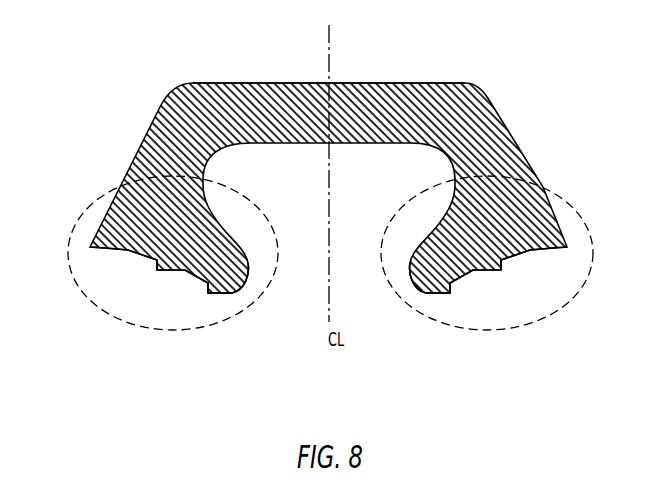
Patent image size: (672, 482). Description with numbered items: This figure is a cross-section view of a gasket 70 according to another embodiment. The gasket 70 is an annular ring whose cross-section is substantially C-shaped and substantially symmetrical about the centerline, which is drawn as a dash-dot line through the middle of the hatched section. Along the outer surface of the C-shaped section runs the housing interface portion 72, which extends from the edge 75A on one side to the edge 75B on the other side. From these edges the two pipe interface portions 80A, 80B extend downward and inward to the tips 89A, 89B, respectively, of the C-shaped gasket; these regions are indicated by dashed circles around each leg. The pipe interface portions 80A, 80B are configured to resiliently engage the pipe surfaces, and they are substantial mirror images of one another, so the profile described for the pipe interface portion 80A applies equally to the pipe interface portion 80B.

The gasket 70 is at (184, 62).
The housing interface portion 72 is at (403, 82).
The edge 75A is at (90, 247).
The edge 75B is at (567, 246).
The pipe interface portion 80A is at (103, 310).
The pipe interface portion 80B is at (560, 306).
The tip 89A is at (238, 293).
The tip 89B is at (422, 292).